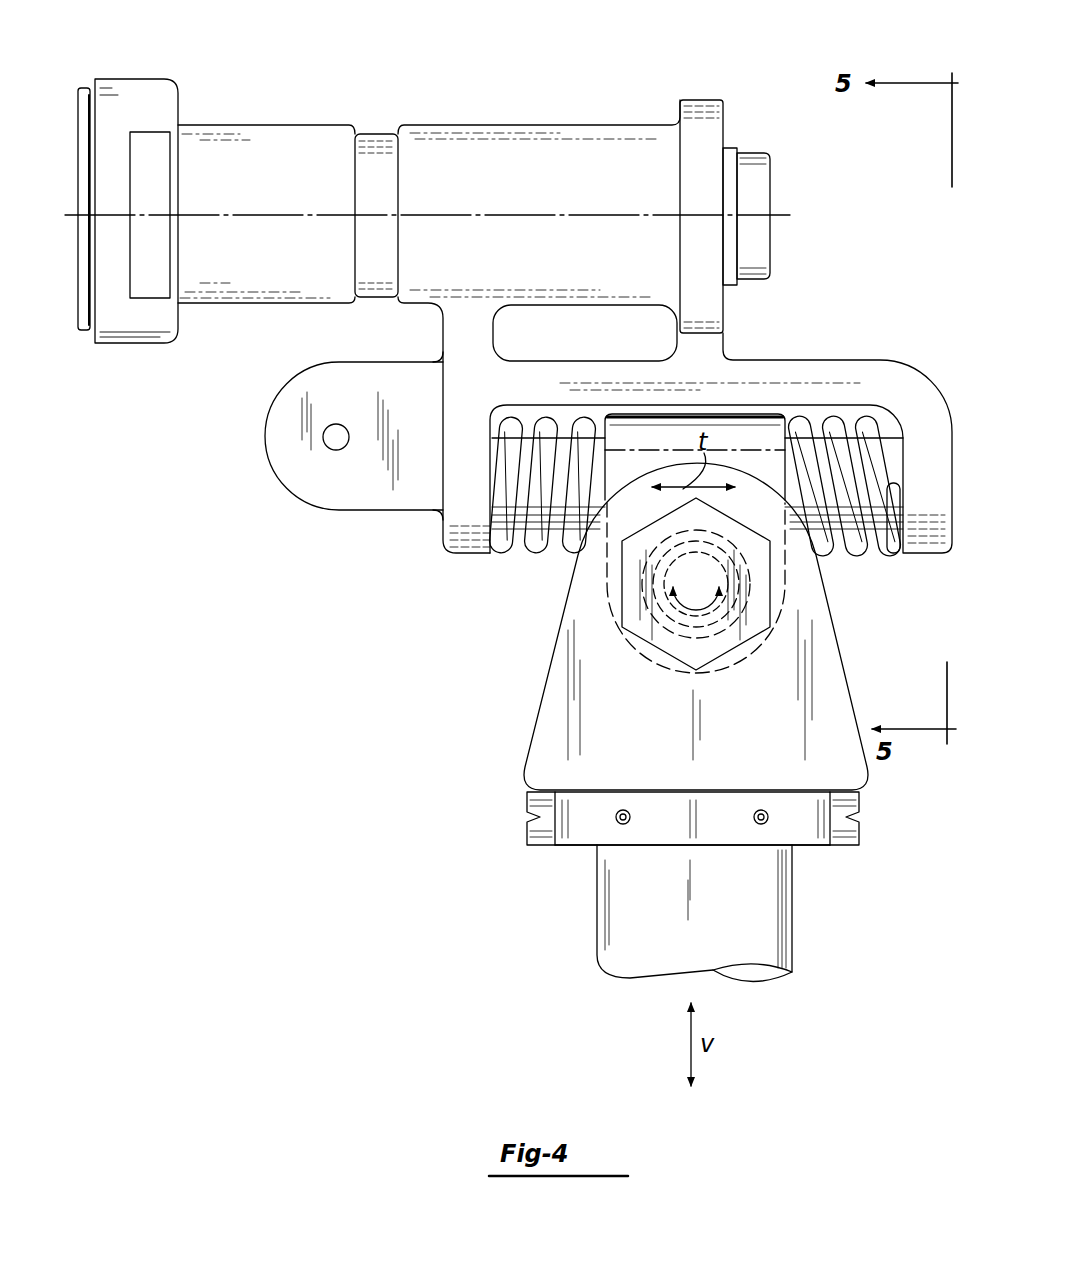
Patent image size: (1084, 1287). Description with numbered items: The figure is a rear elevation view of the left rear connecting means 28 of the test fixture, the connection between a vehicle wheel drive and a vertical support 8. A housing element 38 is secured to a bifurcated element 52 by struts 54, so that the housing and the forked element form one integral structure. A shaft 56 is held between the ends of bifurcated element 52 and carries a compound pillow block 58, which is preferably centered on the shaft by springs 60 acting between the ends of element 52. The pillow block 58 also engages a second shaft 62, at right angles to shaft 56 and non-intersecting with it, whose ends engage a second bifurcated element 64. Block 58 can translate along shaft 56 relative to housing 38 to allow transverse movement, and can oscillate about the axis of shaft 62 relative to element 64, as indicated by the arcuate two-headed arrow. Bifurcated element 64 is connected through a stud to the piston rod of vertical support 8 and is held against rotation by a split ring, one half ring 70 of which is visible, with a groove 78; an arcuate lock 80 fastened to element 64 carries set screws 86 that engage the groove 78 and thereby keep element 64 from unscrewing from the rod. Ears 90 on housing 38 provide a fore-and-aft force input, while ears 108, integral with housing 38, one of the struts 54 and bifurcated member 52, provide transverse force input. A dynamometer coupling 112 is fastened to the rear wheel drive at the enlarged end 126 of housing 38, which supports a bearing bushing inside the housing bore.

The vertical support 8 is at (594, 947).
The connecting means 28 is at (571, 437).
The housing element 38 is at (540, 133).
The bifurcated element 52 is at (780, 365).
The struts 54 is at (677, 340).
The shaft 56 is at (830, 560).
The compound pillow block 58 is at (688, 433).
The springs 60 is at (538, 557).
The second shaft 62 is at (682, 625).
The bifurcated element 64 is at (553, 698).
The half ring 70 is at (528, 840).
The groove 78 is at (528, 812).
The arcuate lock 80 is at (568, 848).
The set screws 86 is at (761, 825).
The ears 90 is at (370, 175).
The ears 108 is at (292, 412).
The dynamometer coupling 112 is at (89, 75).
The enlarged end 126 is at (160, 80).